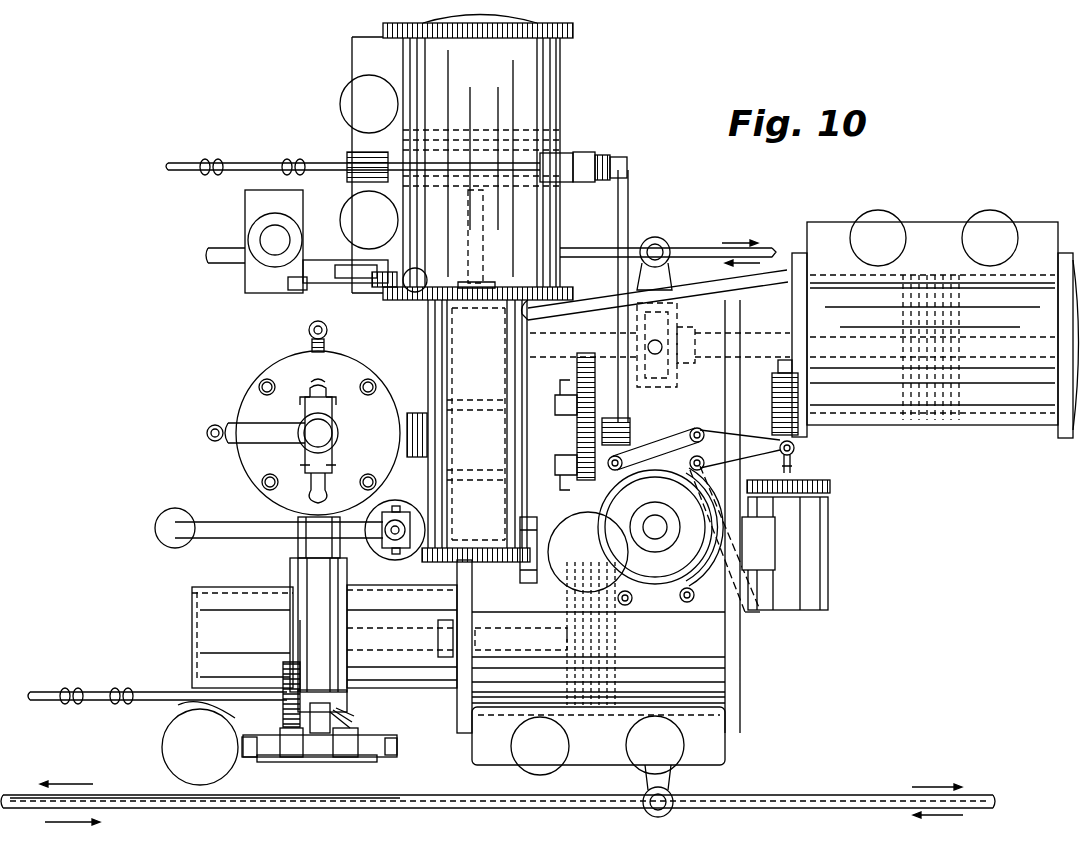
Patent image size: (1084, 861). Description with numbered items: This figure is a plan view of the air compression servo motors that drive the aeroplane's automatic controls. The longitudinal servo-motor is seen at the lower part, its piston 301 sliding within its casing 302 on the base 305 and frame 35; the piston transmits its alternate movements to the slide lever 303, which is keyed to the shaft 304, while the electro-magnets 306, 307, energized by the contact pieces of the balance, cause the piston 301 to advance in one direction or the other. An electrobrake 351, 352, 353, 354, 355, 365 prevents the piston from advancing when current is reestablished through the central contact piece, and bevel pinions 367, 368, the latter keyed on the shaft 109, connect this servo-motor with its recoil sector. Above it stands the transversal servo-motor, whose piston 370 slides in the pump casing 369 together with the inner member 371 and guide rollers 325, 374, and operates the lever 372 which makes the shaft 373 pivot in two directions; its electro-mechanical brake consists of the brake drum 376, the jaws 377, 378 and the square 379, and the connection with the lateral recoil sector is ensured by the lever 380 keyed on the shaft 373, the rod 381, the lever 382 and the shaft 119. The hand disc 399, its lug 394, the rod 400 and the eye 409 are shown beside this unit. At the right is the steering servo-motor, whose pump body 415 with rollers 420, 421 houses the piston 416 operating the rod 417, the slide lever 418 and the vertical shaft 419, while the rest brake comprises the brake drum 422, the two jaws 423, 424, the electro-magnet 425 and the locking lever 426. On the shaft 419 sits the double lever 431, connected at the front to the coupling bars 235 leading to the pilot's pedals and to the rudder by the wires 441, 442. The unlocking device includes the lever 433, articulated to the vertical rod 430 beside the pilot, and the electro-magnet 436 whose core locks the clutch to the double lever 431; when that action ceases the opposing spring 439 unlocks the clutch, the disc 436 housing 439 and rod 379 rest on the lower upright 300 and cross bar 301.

The frame 35 is at (582, 690).
The shaft 109 is at (157, 683).
The shaft 119 is at (240, 163).
The coupling bars 235 is at (118, 798).
The upright 300 is at (468, 692).
The piston 301 is at (522, 712).
The housing 302 is at (400, 632).
The slide lever 303 is at (298, 650).
The shaft 304 is at (300, 602).
The base 305 is at (602, 760).
The electro-magnet 306 is at (525, 758).
The electro-magnet 307 is at (680, 745).
The roller 325 is at (357, 208).
The electrobrake 351 is at (308, 757).
The electrobrake 352 is at (388, 755).
The electrobrake 353 is at (250, 738).
The electrobrake 354 is at (266, 762).
The electrobrake 355 is at (345, 757).
The electrobrake 365 is at (190, 735).
The bevel pinion 367 is at (350, 722).
The bevel pinion 368 is at (285, 668).
The pump casing 369 is at (545, 62).
The piston 370 is at (522, 128).
The inner member 371 is at (470, 230).
The lever 372 is at (462, 462).
The shaft 373 is at (416, 413).
The roller 374 is at (356, 90).
The brake drum 376 is at (583, 430).
The jaw 377 is at (588, 352).
The jaw 378 is at (578, 562).
The square 379 is at (560, 570).
The lever 380 is at (628, 428).
The rod 381 is at (629, 190).
The lever 382 is at (603, 153).
The knob 394 is at (308, 496).
The disc 399 is at (316, 378).
The rod 400 is at (217, 424).
The ring 409 is at (341, 330).
The pump body 415 is at (1030, 405).
The piston 416 is at (900, 312).
The rod 417 is at (862, 352).
The slide lever 418 is at (668, 425).
The vertical shaft 419 is at (756, 612).
The roller 420 is at (862, 243).
The roller 421 is at (975, 238).
The brake drum 422 is at (663, 585).
The jaw 423 is at (562, 488).
The jaw 424 is at (705, 600).
The electro-magnet 425 is at (818, 575).
The locking lever 426 is at (795, 464).
The vertical rod 430 is at (160, 540).
The double lever 431 is at (643, 242).
The lever 433 is at (222, 538).
The electro-magnet 436 is at (380, 556).
The opposing spring 439 is at (400, 512).
The wire 441 is at (857, 800).
The wire 442 is at (668, 261).